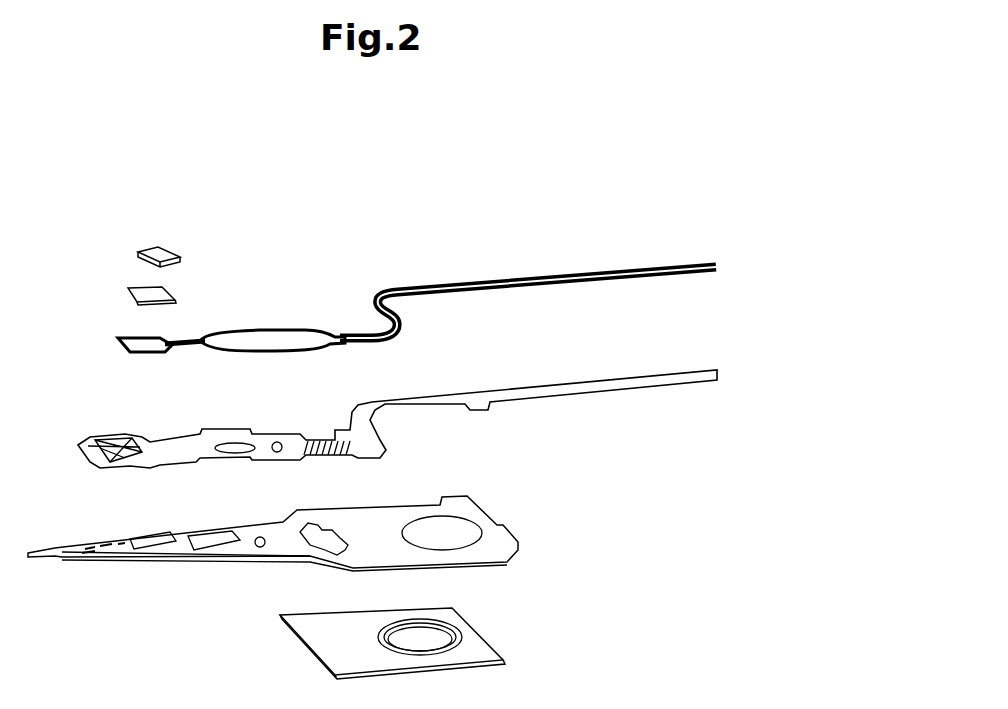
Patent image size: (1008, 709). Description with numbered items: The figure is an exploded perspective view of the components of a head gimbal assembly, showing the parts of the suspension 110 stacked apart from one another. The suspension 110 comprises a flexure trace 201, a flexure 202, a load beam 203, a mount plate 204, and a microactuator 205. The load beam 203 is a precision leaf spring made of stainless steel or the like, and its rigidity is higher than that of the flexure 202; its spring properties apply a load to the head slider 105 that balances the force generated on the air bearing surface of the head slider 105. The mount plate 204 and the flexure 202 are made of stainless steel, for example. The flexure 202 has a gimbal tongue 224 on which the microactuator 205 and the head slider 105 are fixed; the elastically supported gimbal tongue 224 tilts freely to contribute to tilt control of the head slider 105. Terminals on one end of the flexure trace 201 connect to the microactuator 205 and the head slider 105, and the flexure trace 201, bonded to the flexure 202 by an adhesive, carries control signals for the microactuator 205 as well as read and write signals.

The suspension 110 is at (75, 324).
The head slider 105 is at (153, 252).
The microactuator 205 is at (170, 295).
The flexure trace 201 is at (627, 271).
The flexure 202 is at (388, 398).
The gimbal tongue 224 is at (113, 447).
The load beam 203 is at (395, 505).
The mount plate 204 is at (488, 643).